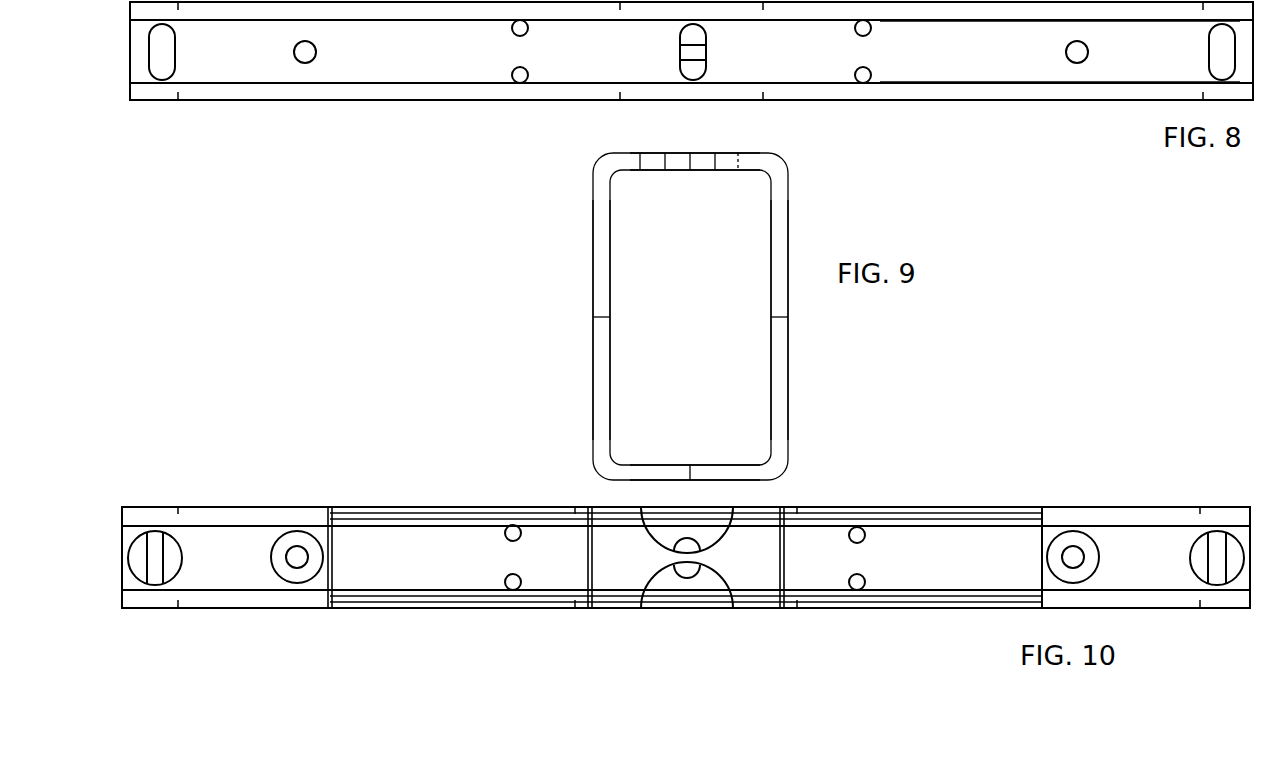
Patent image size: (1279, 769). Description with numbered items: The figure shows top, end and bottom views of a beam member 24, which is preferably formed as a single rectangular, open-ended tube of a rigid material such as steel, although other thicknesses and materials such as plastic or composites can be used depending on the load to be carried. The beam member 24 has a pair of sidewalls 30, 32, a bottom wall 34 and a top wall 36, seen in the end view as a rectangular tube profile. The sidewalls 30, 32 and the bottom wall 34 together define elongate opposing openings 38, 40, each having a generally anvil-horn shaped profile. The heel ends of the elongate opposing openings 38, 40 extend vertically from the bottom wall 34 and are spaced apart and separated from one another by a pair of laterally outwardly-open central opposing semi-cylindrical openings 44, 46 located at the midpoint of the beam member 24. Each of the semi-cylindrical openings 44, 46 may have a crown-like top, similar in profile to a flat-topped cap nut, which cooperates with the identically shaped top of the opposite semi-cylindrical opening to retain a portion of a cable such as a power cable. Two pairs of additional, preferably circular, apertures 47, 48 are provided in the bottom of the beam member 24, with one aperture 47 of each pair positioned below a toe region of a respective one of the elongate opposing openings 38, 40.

In FIG. 8, the beam member 24 is at (256, 116).
In FIG. 9, the beam member 24 is at (575, 178).
In FIG. 10, the beam member 24 is at (250, 485).
In FIG. 9, the sidewall 30 is at (778, 385).
In FIG. 10, the sidewall 30 is at (402, 602).
In FIG. 9, the sidewall 32 is at (599, 224).
In FIG. 10, the sidewall 32 is at (375, 505).
In FIG. 9, the bottom wall 34 is at (663, 465).
In FIG. 10, the bottom wall 34 is at (758, 565).
In FIG. 8, the top wall 36 is at (1025, 60).
In FIG. 9, the top wall 36 is at (697, 155).
In FIG. 10, the top wall 36 is at (948, 555).
In FIG. 8, the elongate opposing opening 38 is at (520, 51).
In FIG. 10, the elongate opposing opening 38 is at (454, 552).
In FIG. 8, the elongate opposing opening 40 is at (863, 51).
In FIG. 10, the elongate opposing opening 40 is at (922, 548).
In FIG. 8, the central opposing semi-cylindrical opening 44 is at (693, 52).
In FIG. 10, the central opposing semi-cylindrical opening 44 is at (710, 538).
In FIG. 10, the central opposing semi-cylindrical opening 46 is at (662, 585).
In FIG. 8, the circular aperture 47 is at (691, 52).
In FIG. 10, the circular aperture 47 is at (308, 543).
In FIG. 8, the circular aperture 48 is at (692, 52).
In FIG. 10, the circular aperture 48 is at (172, 560).